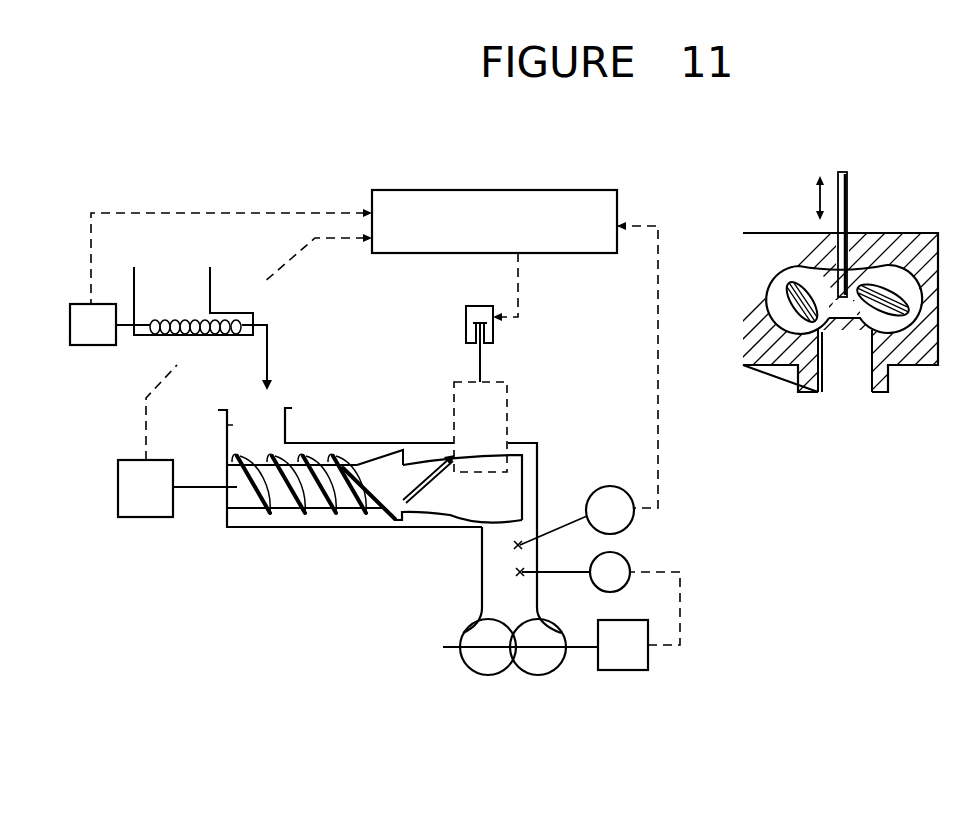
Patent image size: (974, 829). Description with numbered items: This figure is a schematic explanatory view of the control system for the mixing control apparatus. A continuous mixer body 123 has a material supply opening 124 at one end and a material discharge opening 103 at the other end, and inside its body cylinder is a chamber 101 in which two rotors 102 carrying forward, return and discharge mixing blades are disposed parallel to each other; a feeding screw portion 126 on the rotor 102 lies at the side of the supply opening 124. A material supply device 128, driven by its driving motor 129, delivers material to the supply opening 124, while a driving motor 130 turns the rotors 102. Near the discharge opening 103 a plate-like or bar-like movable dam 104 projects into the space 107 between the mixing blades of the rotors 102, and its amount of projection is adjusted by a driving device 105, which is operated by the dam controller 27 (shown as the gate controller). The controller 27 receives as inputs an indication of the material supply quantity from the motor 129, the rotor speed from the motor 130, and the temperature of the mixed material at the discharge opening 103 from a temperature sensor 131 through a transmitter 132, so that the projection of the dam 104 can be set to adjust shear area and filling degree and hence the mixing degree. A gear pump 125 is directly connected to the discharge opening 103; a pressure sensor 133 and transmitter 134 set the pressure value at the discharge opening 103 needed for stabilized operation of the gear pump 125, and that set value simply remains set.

The dam controller 27 is at (526, 190).
The chamber 101 is at (420, 450).
The mixing rotors 102 is at (420, 512).
The material discharge opening 103 is at (483, 563).
The movable dam 104 is at (507, 433).
The driving device 105 is at (466, 321).
The space between the mixing blades 107 is at (845, 360).
The continuous mixer body 123 is at (330, 443).
The material supply opening 124 is at (233, 425).
The gear pump 125 is at (488, 660).
The feeding screw portion 126 is at (255, 502).
The material supply device 128 is at (153, 335).
The driving motor of the material supply device 129 is at (95, 347).
The driving motor of the rotors 130 is at (148, 517).
The temperature sensor 131 is at (520, 545).
The transmitter 132 is at (615, 530).
The pressure sensor 133 is at (520, 573).
The transmitter 134 is at (605, 590).